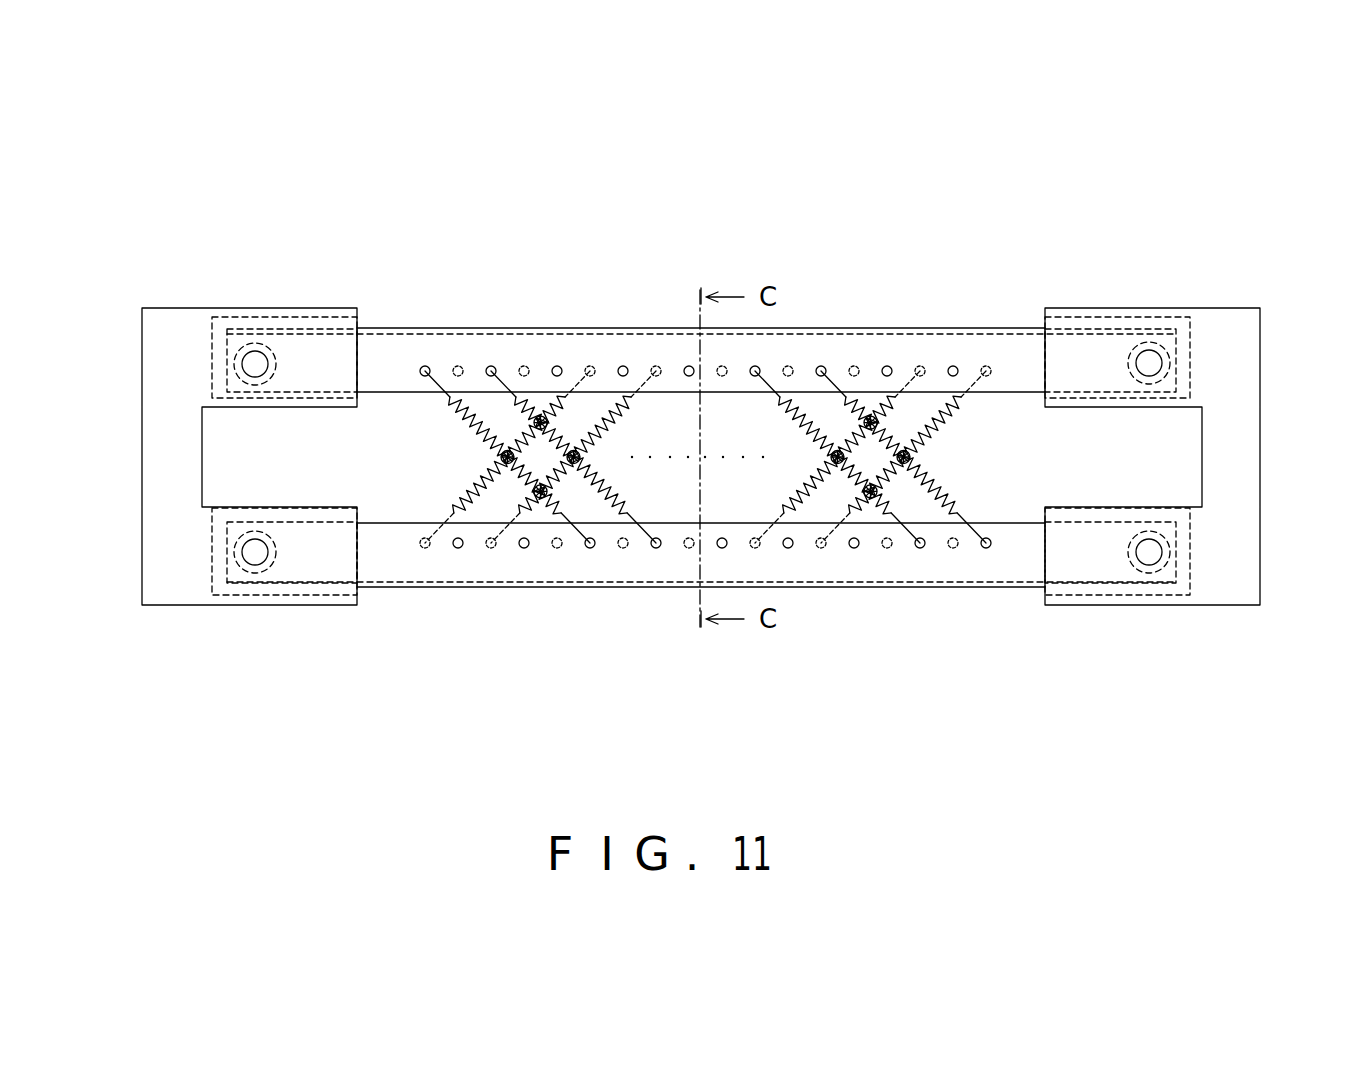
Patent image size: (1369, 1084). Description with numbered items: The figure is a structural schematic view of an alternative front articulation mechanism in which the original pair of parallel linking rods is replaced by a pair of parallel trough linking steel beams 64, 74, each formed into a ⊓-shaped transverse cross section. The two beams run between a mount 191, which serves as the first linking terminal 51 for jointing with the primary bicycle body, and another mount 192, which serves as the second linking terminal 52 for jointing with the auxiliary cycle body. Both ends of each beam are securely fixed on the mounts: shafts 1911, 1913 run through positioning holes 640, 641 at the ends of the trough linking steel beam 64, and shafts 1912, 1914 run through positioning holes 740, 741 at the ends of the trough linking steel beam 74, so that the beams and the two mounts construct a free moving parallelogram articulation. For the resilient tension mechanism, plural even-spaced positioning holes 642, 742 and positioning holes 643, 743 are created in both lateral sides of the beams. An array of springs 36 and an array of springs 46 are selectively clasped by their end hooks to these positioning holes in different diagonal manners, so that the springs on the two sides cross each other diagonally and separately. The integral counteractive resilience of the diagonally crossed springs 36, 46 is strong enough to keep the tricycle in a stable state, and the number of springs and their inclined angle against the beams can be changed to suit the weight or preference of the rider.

The first linking terminal 51 is at (196, 398).
The second linking terminal 52 is at (1203, 526).
The mount 191 is at (172, 320).
The mount 192 is at (1255, 597).
The shaft 1911 is at (255, 364).
The shaft 1912 is at (258, 553).
The shaft 1913 is at (1149, 363).
The shaft 1914 is at (1147, 553).
The trough linking steel beam 64 is at (701, 287).
The positioning hole 640 is at (237, 367).
The positioning hole 641 is at (1165, 365).
The positioning holes 642 is at (425, 371).
The positioning holes 643 is at (457, 371).
The trough linking steel beam 74 is at (701, 633).
The positioning hole 740 is at (240, 552).
The positioning hole 741 is at (1155, 535).
The positioning holes 742 is at (457, 543).
The positioning holes 743 is at (425, 543).
The springs 36 is at (475, 432).
The springs 46 is at (953, 422).